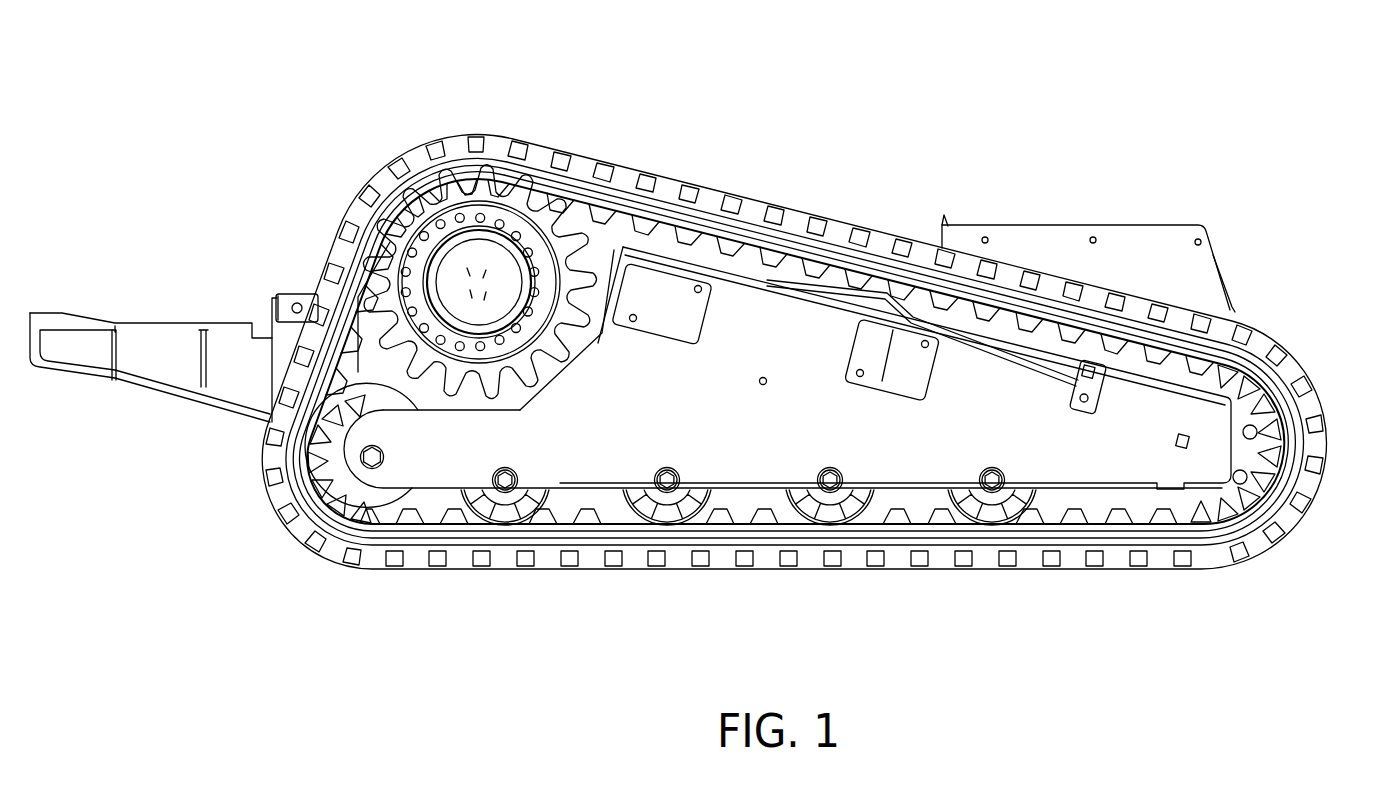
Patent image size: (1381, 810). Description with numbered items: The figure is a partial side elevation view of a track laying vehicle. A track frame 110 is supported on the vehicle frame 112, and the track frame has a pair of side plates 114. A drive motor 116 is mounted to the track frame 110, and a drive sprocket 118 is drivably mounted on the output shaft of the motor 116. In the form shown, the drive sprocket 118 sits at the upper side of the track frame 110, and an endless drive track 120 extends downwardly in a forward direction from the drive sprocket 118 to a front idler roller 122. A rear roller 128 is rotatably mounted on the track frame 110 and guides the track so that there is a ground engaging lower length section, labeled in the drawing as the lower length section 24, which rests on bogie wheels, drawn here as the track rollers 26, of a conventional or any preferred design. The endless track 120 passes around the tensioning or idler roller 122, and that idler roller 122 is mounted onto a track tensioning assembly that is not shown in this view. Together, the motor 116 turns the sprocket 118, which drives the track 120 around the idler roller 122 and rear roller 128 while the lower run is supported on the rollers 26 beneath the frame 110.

The track 24 is at (595, 542).
The track rollers 26 is at (828, 523).
The track frame 110 is at (1046, 454).
The vehicle frame 112 is at (1197, 258).
The side plates 114 is at (1150, 486).
The drive motor 116 is at (486, 268).
The drive sprocket 118 is at (583, 262).
The endless drive track 120 is at (838, 212).
The front idler roller 122 is at (1252, 458).
The rear roller 128 is at (393, 513).